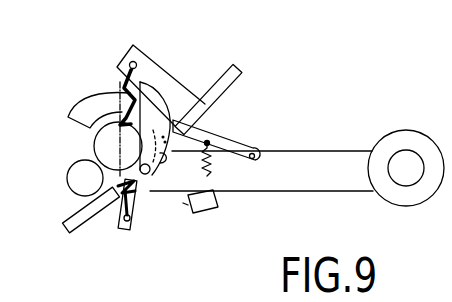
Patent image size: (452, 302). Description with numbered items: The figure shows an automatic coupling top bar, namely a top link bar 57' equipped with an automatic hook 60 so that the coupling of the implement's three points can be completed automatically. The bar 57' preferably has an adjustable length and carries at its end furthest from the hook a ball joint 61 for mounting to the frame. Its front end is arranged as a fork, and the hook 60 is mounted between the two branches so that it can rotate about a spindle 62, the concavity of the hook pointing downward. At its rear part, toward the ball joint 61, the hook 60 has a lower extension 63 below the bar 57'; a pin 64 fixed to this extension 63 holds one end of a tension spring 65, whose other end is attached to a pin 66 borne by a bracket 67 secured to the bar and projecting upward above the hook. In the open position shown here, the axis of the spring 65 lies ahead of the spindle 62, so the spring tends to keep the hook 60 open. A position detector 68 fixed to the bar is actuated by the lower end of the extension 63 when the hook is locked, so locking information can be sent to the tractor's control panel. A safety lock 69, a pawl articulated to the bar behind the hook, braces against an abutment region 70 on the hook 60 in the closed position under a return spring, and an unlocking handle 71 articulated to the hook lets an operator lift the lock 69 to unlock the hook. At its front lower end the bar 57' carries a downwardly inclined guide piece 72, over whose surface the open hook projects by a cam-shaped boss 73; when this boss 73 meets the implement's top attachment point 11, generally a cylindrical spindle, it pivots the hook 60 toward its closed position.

The automatic hook 60 is at (104, 80).
The pin 66 is at (130, 61).
The bracket 67 is at (156, 76).
The unlocking handle 71 is at (218, 82).
The safety lock 69 is at (243, 142).
The abutment region 70 is at (207, 142).
The top link bar 57' is at (261, 132).
The ball joint 61 is at (405, 140).
The tension spring 65 is at (115, 108).
The cam-shaped boss 73 is at (94, 147).
The top attachment point 11 is at (78, 182).
The guide piece 72 is at (70, 218).
The pin 64 is at (119, 230).
The lower extension 63 is at (143, 200).
The spindle 62 is at (148, 190).
The position detector 68 is at (210, 204).